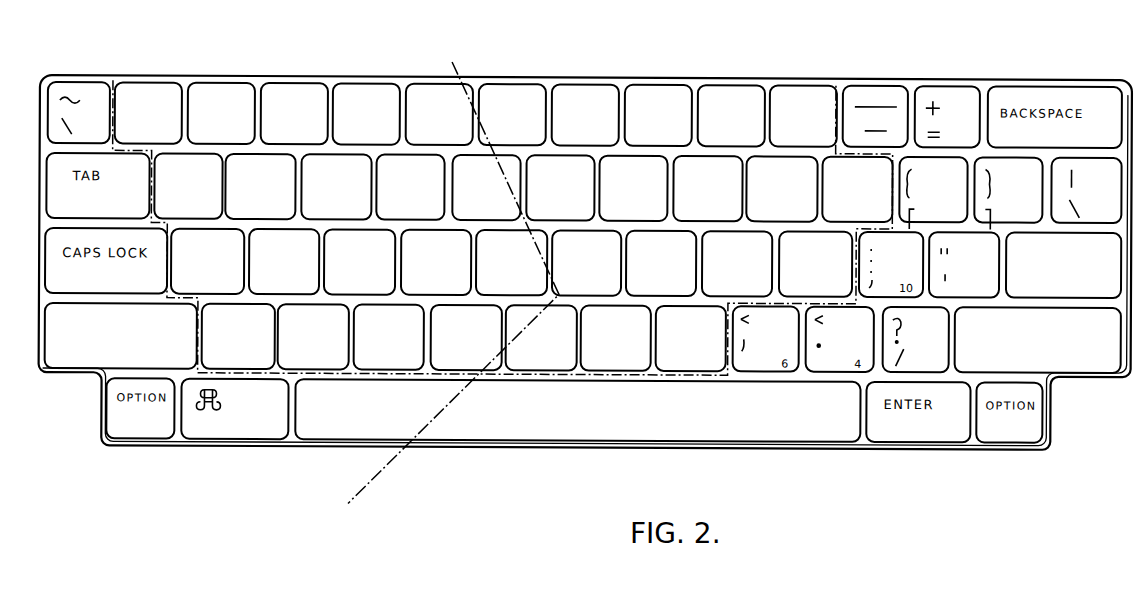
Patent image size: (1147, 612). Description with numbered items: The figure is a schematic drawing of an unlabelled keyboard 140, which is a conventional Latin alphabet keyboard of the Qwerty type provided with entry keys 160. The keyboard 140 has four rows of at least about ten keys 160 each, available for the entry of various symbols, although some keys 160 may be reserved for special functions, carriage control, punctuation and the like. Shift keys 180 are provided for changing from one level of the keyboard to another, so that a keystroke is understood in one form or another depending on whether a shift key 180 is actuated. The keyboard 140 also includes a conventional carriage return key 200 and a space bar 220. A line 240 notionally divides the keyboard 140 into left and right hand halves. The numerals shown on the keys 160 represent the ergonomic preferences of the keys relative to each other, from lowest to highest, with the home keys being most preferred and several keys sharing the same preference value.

The keyboard 140 is at (940, 62).
The entry keys 160 is at (180, 153).
The shift keys 180 is at (97, 350).
The carriage return key 200 is at (1122, 288).
The space bar 220 is at (702, 431).
The line 240 is at (451, 51).